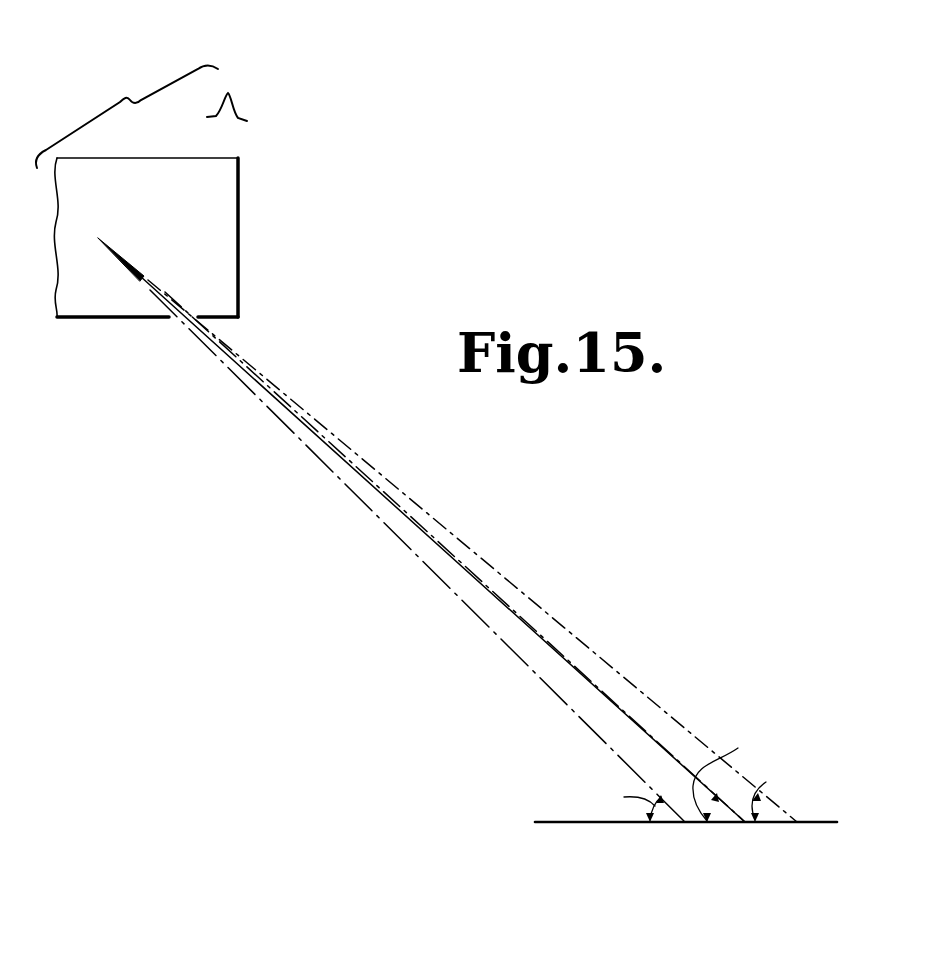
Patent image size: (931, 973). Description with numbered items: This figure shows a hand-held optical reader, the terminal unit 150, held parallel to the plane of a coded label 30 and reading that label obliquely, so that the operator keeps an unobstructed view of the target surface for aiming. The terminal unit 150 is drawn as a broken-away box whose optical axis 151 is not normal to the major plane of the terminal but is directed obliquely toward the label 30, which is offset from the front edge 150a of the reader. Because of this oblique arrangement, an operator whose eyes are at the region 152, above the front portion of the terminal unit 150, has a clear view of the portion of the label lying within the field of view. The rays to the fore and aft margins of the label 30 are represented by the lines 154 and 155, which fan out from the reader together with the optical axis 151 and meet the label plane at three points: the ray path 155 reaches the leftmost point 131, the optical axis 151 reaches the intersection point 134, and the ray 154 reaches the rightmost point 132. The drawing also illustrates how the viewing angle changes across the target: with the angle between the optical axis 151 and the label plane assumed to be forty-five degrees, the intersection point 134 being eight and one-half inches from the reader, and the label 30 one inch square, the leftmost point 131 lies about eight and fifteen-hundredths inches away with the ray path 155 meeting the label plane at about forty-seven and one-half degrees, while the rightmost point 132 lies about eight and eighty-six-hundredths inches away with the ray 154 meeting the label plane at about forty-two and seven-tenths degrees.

The terminal unit 150 is at (145, 165).
The front edge 150a is at (240, 240).
The region 152 is at (236, 122).
The optical axis 151 is at (308, 425).
The ray 154 is at (584, 646).
The ray path 155 is at (426, 566).
The label 30 is at (786, 825).
The leftmost point 131 is at (688, 824).
The intersection point 134 is at (745, 824).
The rightmost point 132 is at (799, 819).